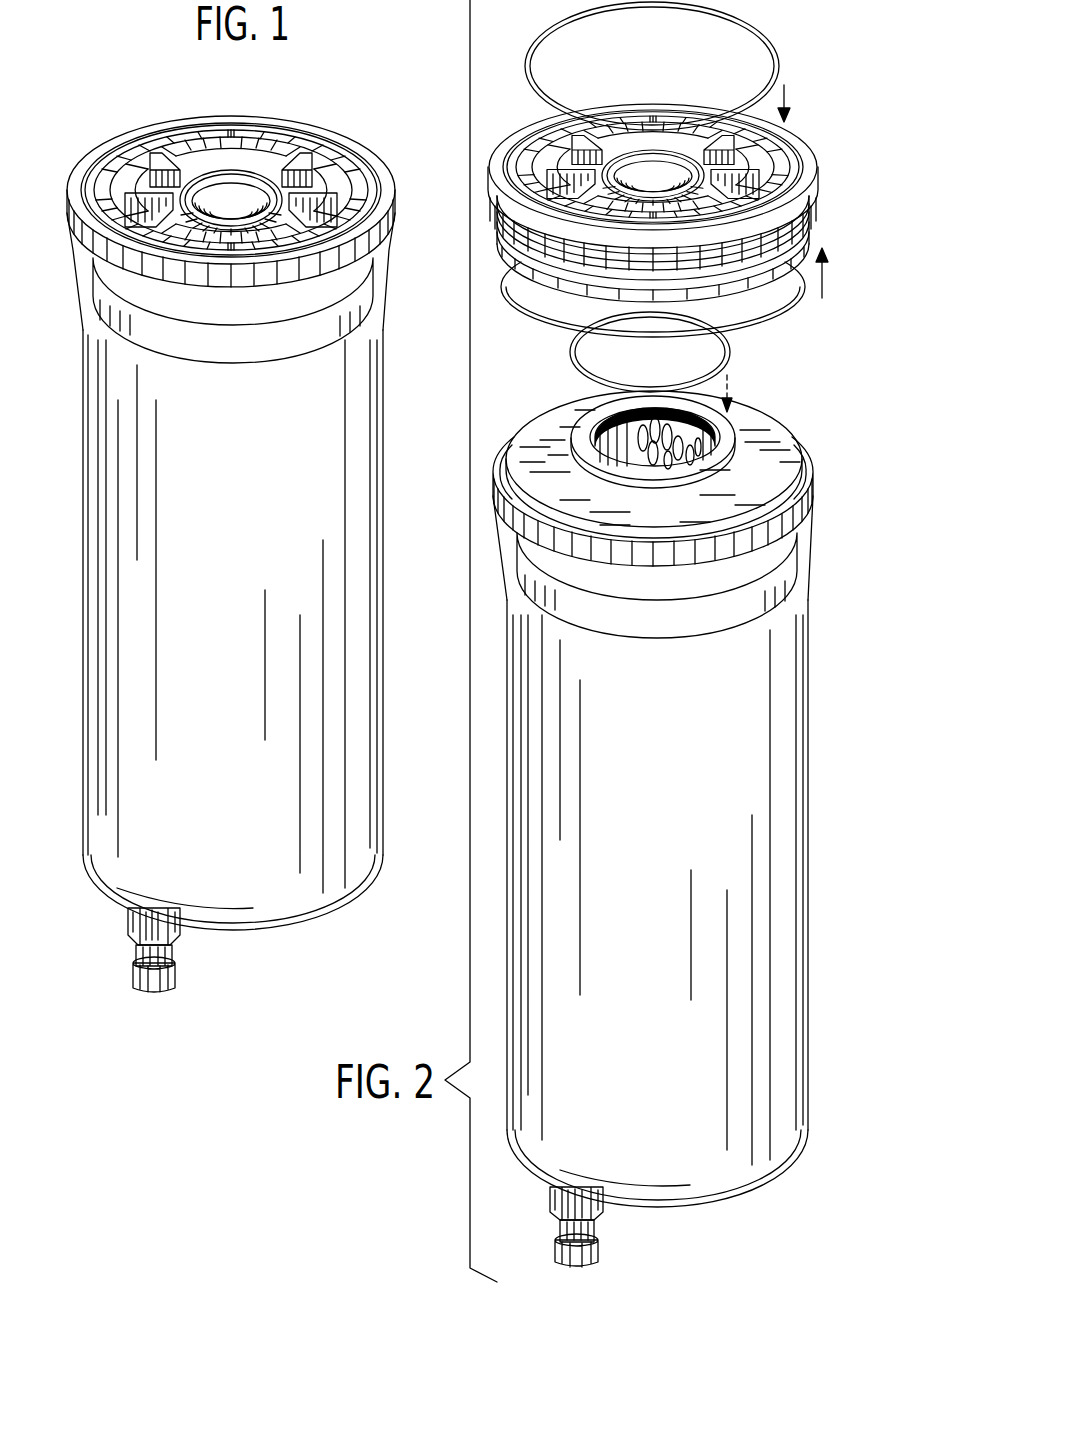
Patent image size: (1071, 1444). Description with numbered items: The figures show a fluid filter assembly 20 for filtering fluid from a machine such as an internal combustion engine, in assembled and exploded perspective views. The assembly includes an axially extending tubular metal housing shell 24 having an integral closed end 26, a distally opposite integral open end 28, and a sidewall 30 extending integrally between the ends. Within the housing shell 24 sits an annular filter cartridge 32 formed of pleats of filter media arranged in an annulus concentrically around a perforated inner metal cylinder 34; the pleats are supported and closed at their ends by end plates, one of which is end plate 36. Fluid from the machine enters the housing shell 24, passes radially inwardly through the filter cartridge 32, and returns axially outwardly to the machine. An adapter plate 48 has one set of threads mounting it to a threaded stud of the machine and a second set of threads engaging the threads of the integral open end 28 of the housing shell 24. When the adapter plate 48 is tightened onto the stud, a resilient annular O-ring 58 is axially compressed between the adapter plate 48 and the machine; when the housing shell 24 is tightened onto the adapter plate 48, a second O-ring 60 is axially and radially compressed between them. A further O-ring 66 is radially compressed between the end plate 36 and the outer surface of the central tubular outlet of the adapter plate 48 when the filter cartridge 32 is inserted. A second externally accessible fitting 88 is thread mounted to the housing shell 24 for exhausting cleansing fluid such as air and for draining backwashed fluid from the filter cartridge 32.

In FIG. 1, the fluid filter assembly 20 is at (110, 100).
In FIG. 1, the housing shell 24 is at (108, 471).
In FIG. 2, the housing shell 24 is at (518, 850).
In FIG. 1, the integral closed end 26 is at (233, 936).
In FIG. 1, the integral open end 28 is at (388, 234).
In FIG. 1, the sidewall 30 is at (383, 577).
In FIG. 1, the adapter plate 48 is at (372, 152).
In FIG. 2, the adapter plate 48 is at (806, 162).
In FIG. 2, the O-ring 58 is at (770, 39).
In FIG. 2, the O-ring 60 is at (796, 313).
In FIG. 2, the O-ring 66 is at (732, 355).
In FIG. 2, the filter cartridge 32 is at (797, 490).
In FIG. 2, the perforated inner metal cylinder 34 is at (692, 430).
In FIG. 2, the end plate 36 is at (787, 448).
In FIG. 2, the second externally accessible fitting 88 is at (553, 1245).